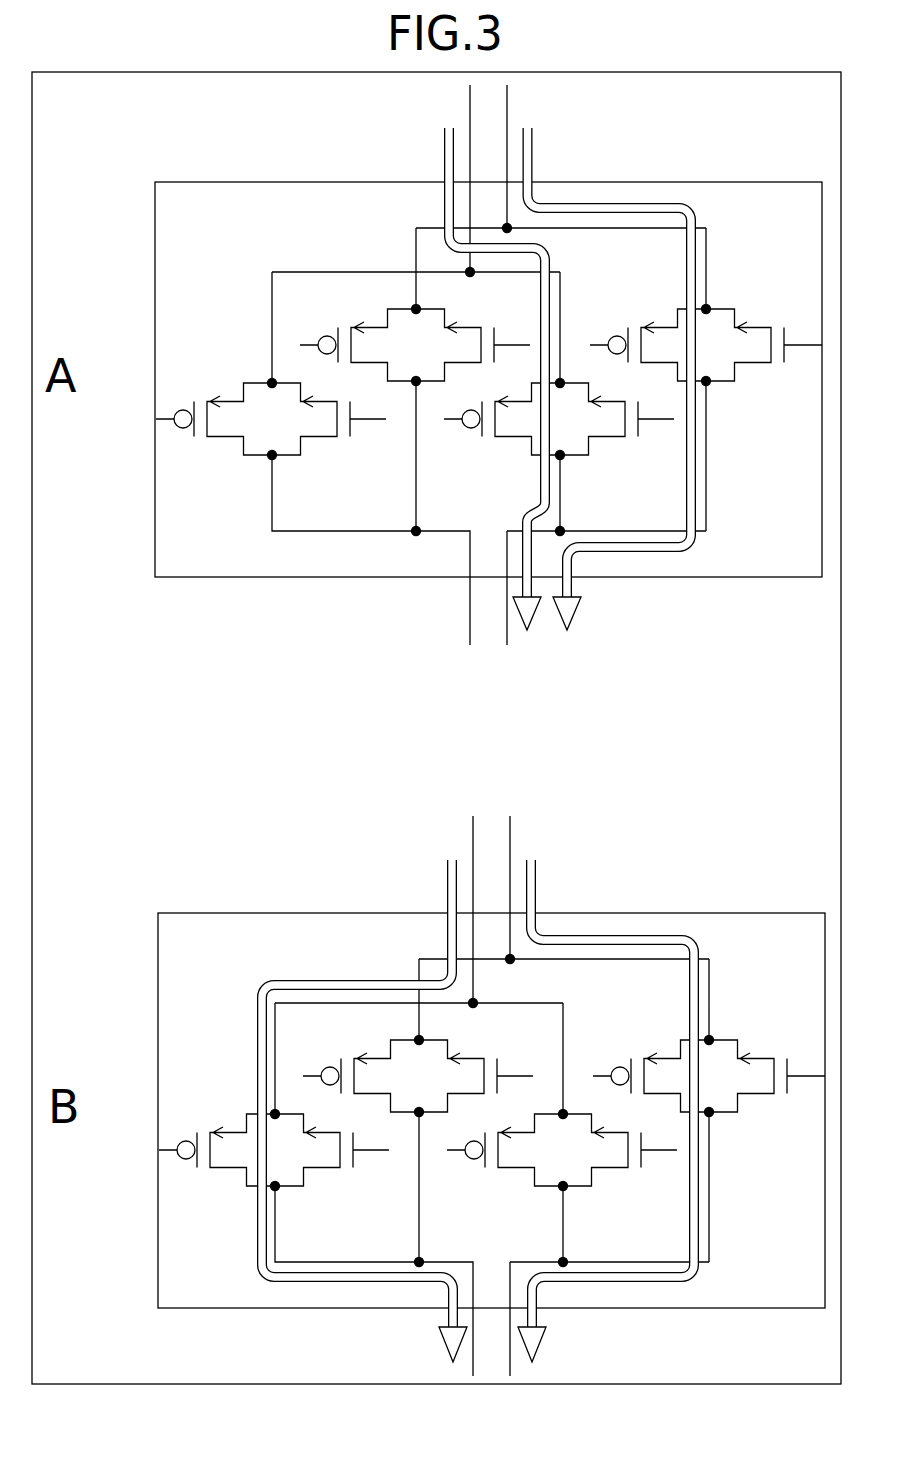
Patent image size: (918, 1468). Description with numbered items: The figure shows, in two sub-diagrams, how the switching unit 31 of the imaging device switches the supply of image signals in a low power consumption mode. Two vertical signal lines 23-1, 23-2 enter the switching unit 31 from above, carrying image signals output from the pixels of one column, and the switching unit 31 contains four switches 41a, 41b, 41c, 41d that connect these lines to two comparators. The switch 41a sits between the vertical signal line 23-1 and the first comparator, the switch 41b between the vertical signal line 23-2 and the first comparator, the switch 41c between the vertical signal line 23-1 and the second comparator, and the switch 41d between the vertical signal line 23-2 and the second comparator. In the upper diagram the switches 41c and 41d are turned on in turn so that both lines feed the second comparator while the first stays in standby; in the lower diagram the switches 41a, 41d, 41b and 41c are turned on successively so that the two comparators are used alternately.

The vertical signal line 23-1 is at (470, 110).
The vertical signal line 23-2 is at (508, 108).
The switching unit 31 is at (154, 381).
The switch 41a is at (212, 378).
The switch 41b is at (397, 398).
The switch 41c is at (619, 453).
The switch 41d is at (763, 382).